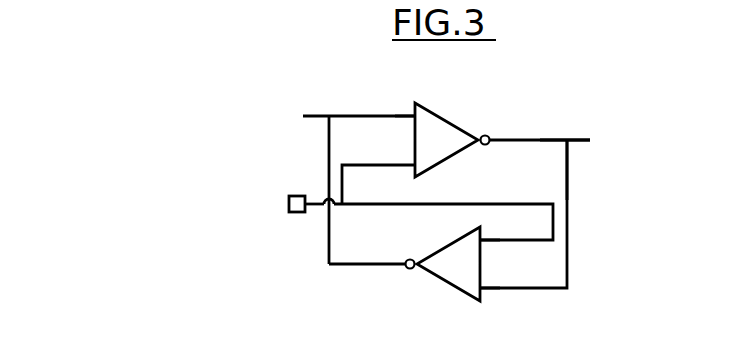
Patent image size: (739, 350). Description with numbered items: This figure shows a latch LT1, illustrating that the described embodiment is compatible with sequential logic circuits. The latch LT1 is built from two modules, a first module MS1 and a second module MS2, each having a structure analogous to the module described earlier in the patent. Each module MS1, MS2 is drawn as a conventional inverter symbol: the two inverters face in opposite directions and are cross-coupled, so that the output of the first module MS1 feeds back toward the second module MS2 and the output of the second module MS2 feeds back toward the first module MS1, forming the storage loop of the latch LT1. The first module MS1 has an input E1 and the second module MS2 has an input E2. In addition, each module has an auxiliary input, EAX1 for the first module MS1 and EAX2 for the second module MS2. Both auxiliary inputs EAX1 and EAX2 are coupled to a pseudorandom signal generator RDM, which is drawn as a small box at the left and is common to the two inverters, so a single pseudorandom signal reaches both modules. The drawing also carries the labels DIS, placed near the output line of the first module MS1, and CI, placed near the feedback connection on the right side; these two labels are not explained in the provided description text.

The latch LT1 is at (273, 90).
The first module MS1 is at (446, 117).
The second module MS2 is at (452, 290).
The input E1 is at (413, 107).
The input E2 is at (483, 298).
The auxiliary input EAX1 is at (411, 165).
The auxiliary input EAX2 is at (483, 243).
The pseudorandom signal generator RDM is at (295, 195).
The output signal DIS is at (575, 90).
The feedback connection CI is at (615, 117).